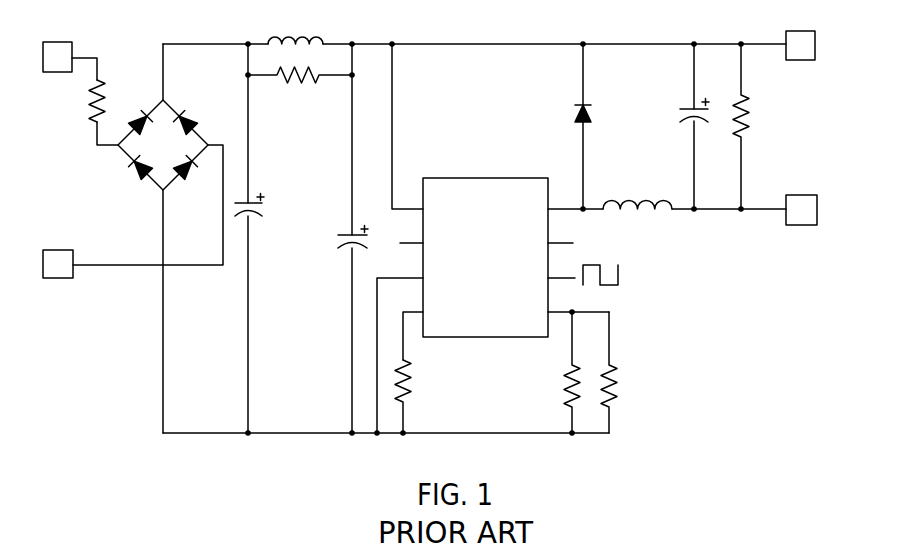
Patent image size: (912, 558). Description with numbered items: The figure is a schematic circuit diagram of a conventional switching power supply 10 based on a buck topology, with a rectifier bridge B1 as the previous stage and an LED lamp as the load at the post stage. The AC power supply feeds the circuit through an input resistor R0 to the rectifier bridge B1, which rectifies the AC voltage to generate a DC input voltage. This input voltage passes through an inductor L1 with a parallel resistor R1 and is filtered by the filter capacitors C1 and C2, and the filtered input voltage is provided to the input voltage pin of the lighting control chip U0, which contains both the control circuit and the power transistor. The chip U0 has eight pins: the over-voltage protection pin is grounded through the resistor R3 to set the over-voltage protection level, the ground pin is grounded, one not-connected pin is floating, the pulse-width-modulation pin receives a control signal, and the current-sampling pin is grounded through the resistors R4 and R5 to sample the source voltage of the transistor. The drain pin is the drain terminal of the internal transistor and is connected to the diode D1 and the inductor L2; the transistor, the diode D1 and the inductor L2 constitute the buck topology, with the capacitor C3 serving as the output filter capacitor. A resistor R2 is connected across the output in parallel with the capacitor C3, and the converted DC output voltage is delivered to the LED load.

The prior art LED driver circuit 10 is at (83, 28).
The input resistor R0 is at (114, 95).
The rectifier bridge B1 is at (161, 158).
The input filter inductor L1 is at (295, 27).
The damping resistor R1 is at (300, 90).
The filter capacitor C1 is at (271, 206).
The filter capacitor C2 is at (335, 247).
The lighting control chip U0 is at (497, 281).
The resistor R3 is at (421, 396).
The resistor R4 is at (553, 372).
The resistor R5 is at (629, 372).
The diode D1 is at (572, 126).
The inductor L2 is at (694, 221).
The capacitor C3 is at (678, 126).
The output resistor R2 is at (760, 126).